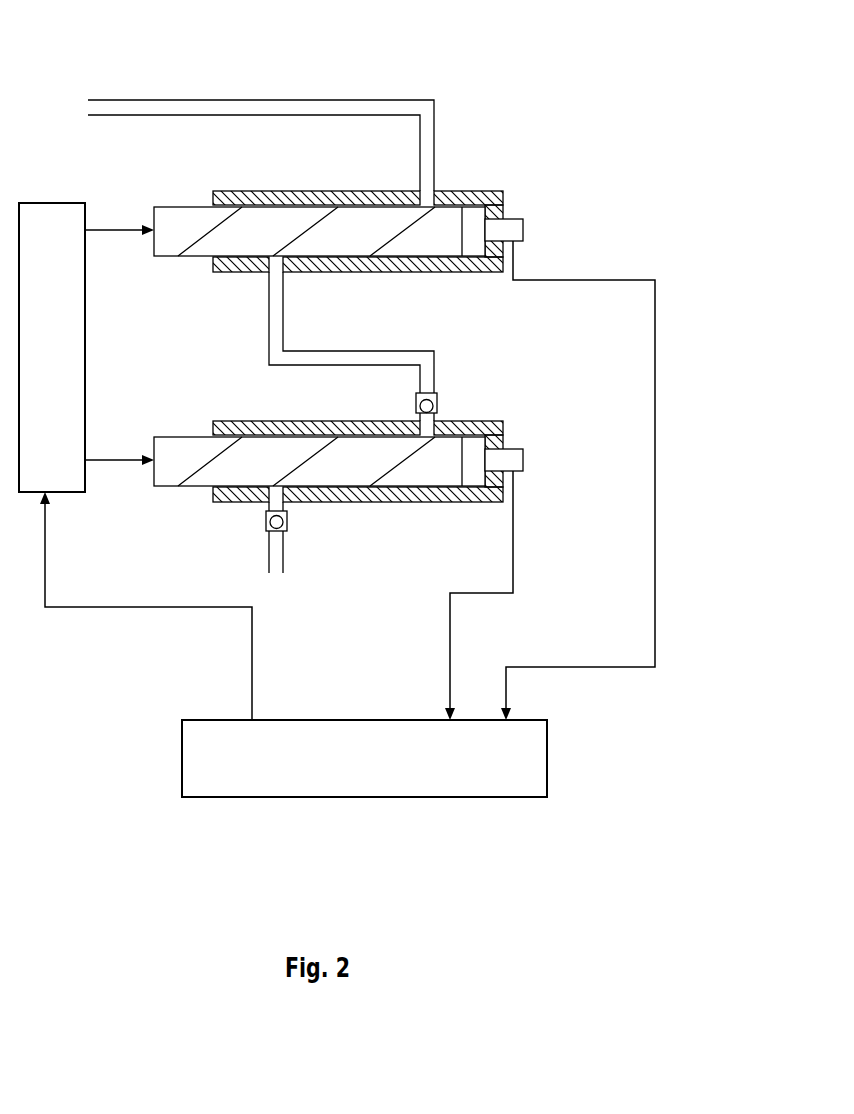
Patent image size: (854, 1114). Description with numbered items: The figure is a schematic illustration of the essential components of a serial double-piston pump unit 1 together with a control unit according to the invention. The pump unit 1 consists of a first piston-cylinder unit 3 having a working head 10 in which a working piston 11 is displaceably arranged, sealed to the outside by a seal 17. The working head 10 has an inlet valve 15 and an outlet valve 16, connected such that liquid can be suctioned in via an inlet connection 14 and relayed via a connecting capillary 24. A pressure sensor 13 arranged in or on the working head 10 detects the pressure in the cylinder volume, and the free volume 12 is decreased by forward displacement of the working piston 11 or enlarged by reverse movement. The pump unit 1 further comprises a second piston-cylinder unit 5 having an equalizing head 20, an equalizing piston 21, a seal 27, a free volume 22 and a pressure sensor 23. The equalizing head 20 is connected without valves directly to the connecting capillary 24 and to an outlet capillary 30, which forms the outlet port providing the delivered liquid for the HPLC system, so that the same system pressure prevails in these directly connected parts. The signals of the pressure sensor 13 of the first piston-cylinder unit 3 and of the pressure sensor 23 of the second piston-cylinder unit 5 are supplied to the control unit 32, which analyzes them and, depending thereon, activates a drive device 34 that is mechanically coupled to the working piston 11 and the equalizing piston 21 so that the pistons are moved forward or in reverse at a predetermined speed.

The serial double-piston pump unit 1 is at (494, 64).
The first piston-cylinder unit 3 is at (371, 477).
The second piston-cylinder unit 5 is at (370, 240).
The working head 10 is at (358, 490).
The working piston 11 is at (417, 473).
The free volume 12 is at (472, 477).
The pressure sensor 13 is at (508, 457).
The inlet connection 14 is at (266, 560).
The inlet valve 15 is at (263, 517).
The outlet valve 16 is at (440, 405).
The seal 17 is at (215, 427).
The equalizing head 20 is at (356, 258).
The equalizing piston 21 is at (420, 255).
The free volume 22 is at (472, 250).
The pressure sensor 23 is at (508, 227).
The connecting capillary 24 is at (268, 313).
The seal 27 is at (208, 195).
The outlet capillary 30 is at (430, 137).
The control unit 32 is at (482, 778).
The drive device 34 is at (45, 218).